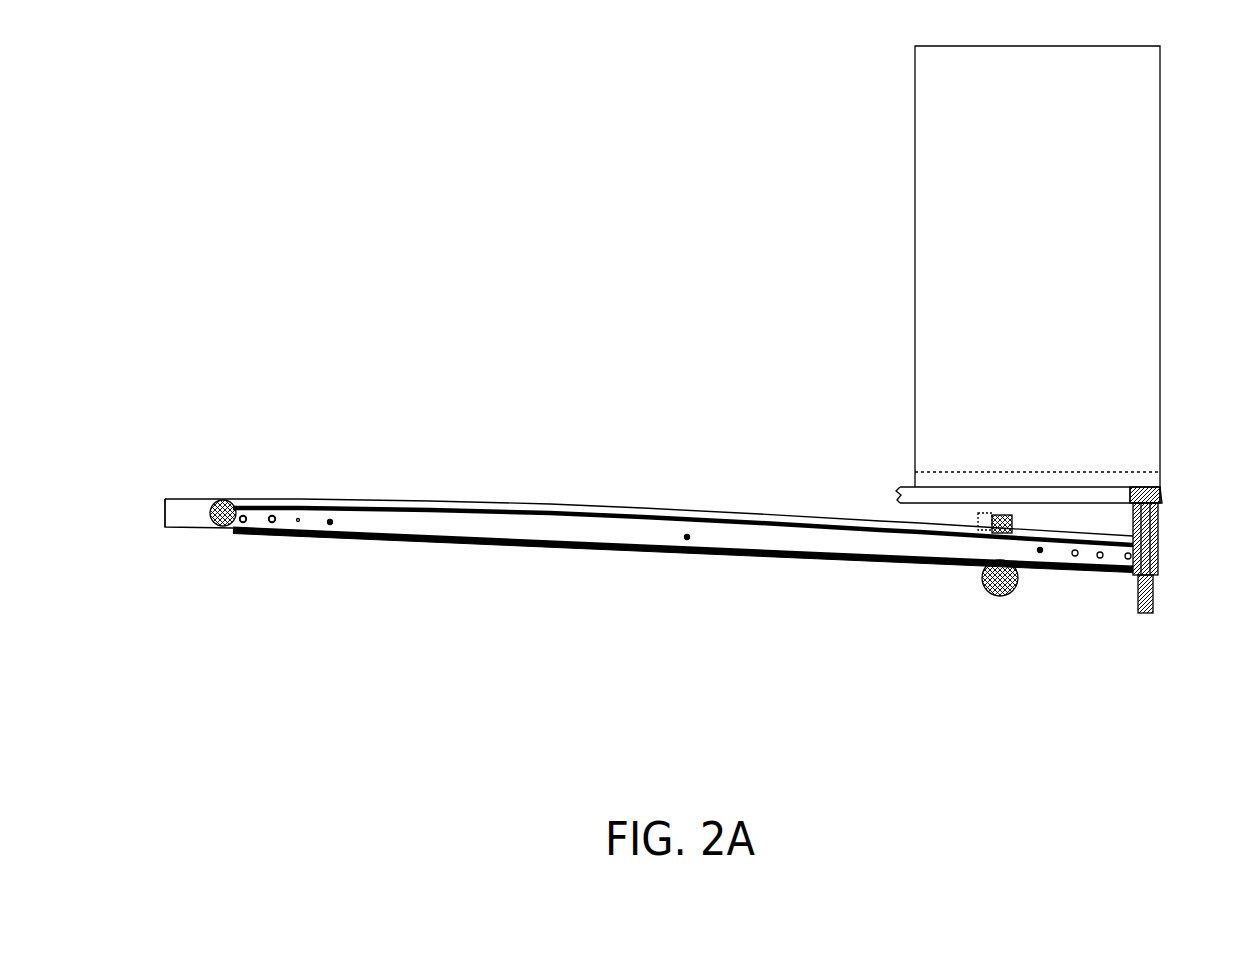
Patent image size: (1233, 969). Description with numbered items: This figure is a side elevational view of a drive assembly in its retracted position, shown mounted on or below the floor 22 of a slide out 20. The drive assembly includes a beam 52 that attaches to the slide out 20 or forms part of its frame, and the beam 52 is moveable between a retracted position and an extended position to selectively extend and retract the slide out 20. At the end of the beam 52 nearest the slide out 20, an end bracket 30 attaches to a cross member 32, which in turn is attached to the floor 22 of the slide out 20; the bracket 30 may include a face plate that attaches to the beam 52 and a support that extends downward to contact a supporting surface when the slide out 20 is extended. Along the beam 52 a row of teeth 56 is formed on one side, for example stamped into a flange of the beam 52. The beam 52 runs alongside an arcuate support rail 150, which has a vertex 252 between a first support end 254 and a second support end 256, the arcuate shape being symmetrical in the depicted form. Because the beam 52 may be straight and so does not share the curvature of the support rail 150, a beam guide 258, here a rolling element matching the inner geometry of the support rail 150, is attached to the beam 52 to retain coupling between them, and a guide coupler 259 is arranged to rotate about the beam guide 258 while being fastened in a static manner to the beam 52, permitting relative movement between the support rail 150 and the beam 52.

The slide out 20 is at (1020, 239).
The floor 22 is at (1150, 474).
The end bracket 30 is at (1164, 531).
The cross member 32 is at (1164, 493).
The beam 52 is at (862, 546).
The second row of teeth 56 is at (922, 565).
The support rail 150 is at (537, 502).
The vertex 252 is at (644, 499).
The first support end 254 is at (998, 533).
The second support end 256 is at (171, 508).
The beam guide 258 is at (228, 526).
The guide coupler 259 is at (259, 517).